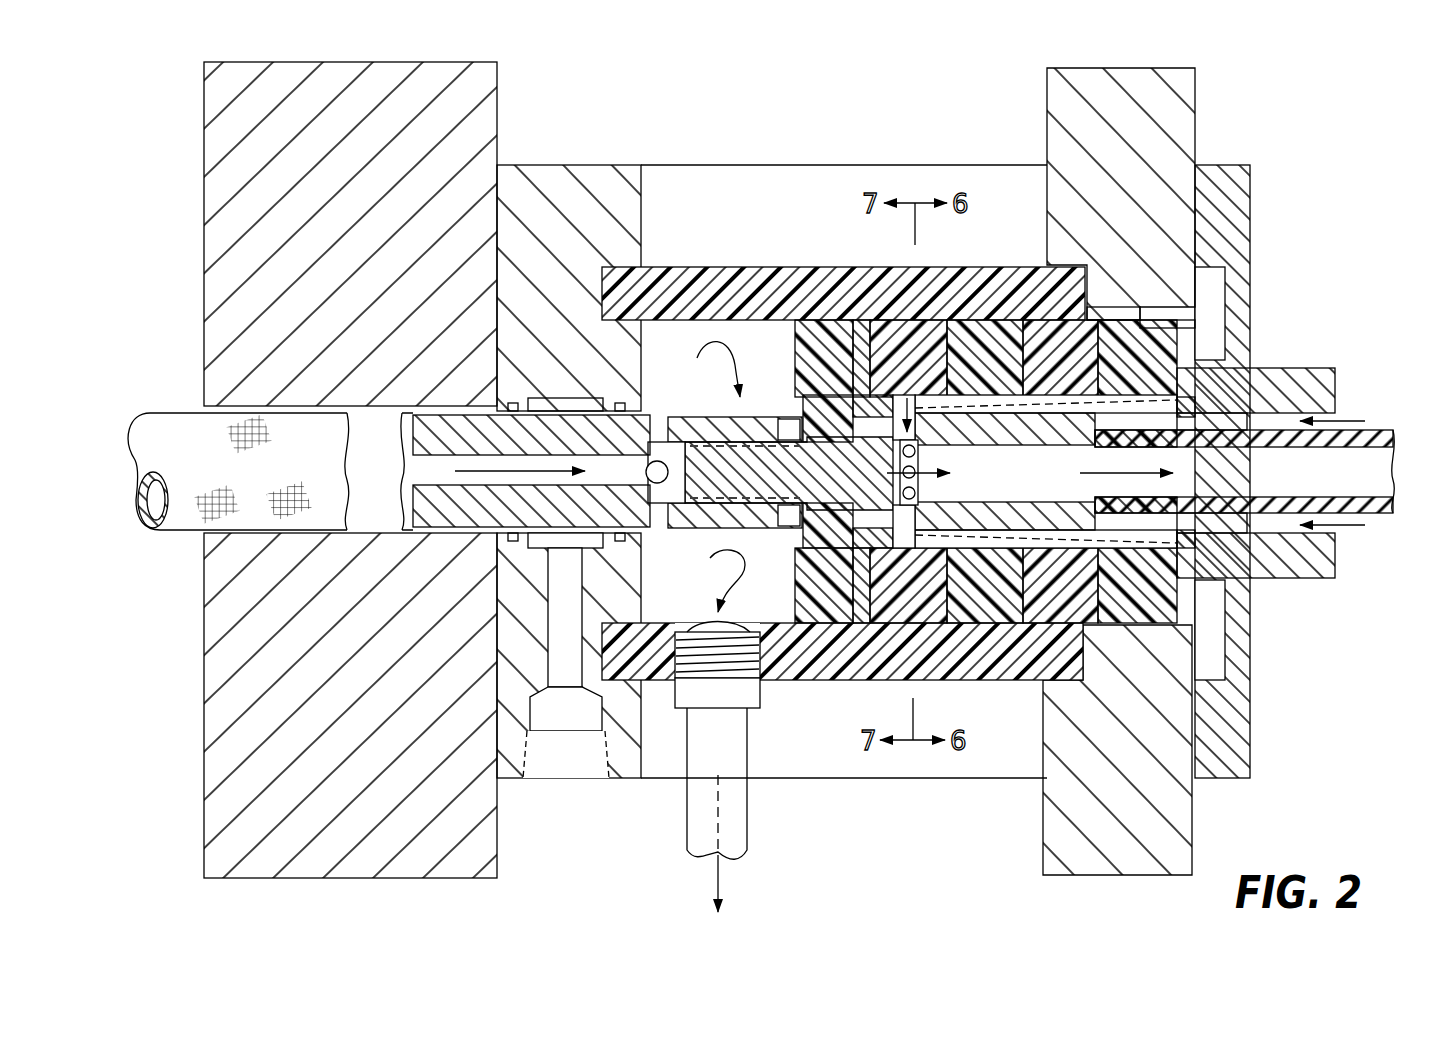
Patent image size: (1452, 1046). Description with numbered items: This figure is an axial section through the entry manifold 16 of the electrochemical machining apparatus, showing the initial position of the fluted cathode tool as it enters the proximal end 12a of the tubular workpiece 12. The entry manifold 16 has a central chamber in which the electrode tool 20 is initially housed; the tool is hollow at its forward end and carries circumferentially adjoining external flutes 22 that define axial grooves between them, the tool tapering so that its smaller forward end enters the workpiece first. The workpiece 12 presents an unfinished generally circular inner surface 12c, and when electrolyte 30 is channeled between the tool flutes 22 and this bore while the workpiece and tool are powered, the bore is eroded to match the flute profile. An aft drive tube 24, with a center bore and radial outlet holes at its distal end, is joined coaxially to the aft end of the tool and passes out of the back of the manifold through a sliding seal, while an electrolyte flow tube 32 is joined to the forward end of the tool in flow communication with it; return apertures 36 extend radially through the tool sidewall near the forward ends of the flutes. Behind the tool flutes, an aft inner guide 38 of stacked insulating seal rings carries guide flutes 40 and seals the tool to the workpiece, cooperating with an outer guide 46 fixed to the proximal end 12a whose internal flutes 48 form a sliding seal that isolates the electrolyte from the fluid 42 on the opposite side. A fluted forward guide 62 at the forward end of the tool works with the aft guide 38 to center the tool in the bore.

The workpiece 12 is at (1273, 475).
The proximal end 12a is at (1257, 600).
The unfinished inner surface 12c is at (1252, 580).
The entry manifold 16 is at (592, 160).
The electrode tool 20 is at (1053, 405).
The external flutes 22 is at (1162, 522).
The aft drive tube 24 is at (293, 535).
The electrolyte 30 is at (1345, 420).
The electrolyte flow tube 32 is at (1384, 435).
The return apertures 36 is at (906, 530).
The aft inner guide 38 is at (836, 553).
The guide flutes 40 is at (852, 340).
The fluid 42 is at (481, 474).
The outer guide 46 is at (928, 373).
The internal flutes 48 is at (1120, 407).
The forward guide 62 is at (1215, 405).